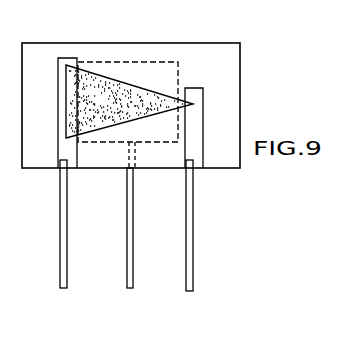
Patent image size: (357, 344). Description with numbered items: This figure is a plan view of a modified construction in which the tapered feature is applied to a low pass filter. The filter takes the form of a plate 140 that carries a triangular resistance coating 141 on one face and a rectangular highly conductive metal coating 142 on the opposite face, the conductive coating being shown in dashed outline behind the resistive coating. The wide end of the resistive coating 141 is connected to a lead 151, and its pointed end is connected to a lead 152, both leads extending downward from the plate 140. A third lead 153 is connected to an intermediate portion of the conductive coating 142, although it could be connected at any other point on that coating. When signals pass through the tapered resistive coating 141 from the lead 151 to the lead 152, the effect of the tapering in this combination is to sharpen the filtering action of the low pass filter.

The plate 140 is at (241, 63).
The triangular resistance coating 141 is at (92, 72).
The rectangular highly conductive metal coating 142 is at (179, 64).
The lead 151 is at (60, 217).
The lead 152 is at (194, 236).
The lead 153 is at (133, 225).